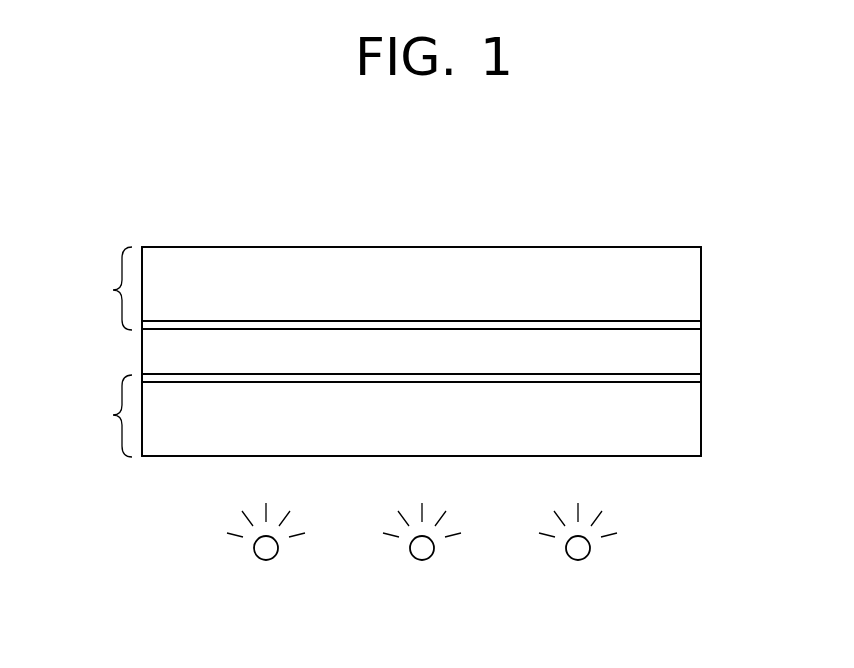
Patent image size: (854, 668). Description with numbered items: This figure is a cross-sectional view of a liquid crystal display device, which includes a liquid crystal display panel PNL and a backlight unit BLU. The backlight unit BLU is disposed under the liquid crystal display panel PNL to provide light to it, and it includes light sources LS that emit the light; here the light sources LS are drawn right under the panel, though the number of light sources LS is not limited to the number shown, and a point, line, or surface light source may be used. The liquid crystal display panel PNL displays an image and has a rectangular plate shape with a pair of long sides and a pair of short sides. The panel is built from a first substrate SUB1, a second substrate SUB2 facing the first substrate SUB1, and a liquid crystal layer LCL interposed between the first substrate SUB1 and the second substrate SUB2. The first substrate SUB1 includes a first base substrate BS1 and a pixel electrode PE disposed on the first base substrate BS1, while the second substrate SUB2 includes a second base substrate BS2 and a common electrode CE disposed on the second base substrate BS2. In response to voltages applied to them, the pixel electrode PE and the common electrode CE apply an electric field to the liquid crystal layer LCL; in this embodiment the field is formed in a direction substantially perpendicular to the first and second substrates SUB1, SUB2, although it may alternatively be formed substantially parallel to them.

The liquid crystal display panel PNL is at (464, 310).
The second base substrate BS2 is at (687, 287).
The common electrode CE is at (687, 325).
The liquid crystal layer LCL is at (687, 355).
The pixel electrode PE is at (687, 379).
The first base substrate BS1 is at (687, 418).
The second substrate SUB2 is at (94, 288).
The first substrate SUB1 is at (94, 416).
The backlight unit BLU is at (483, 567).
The light source LS is at (265, 550).